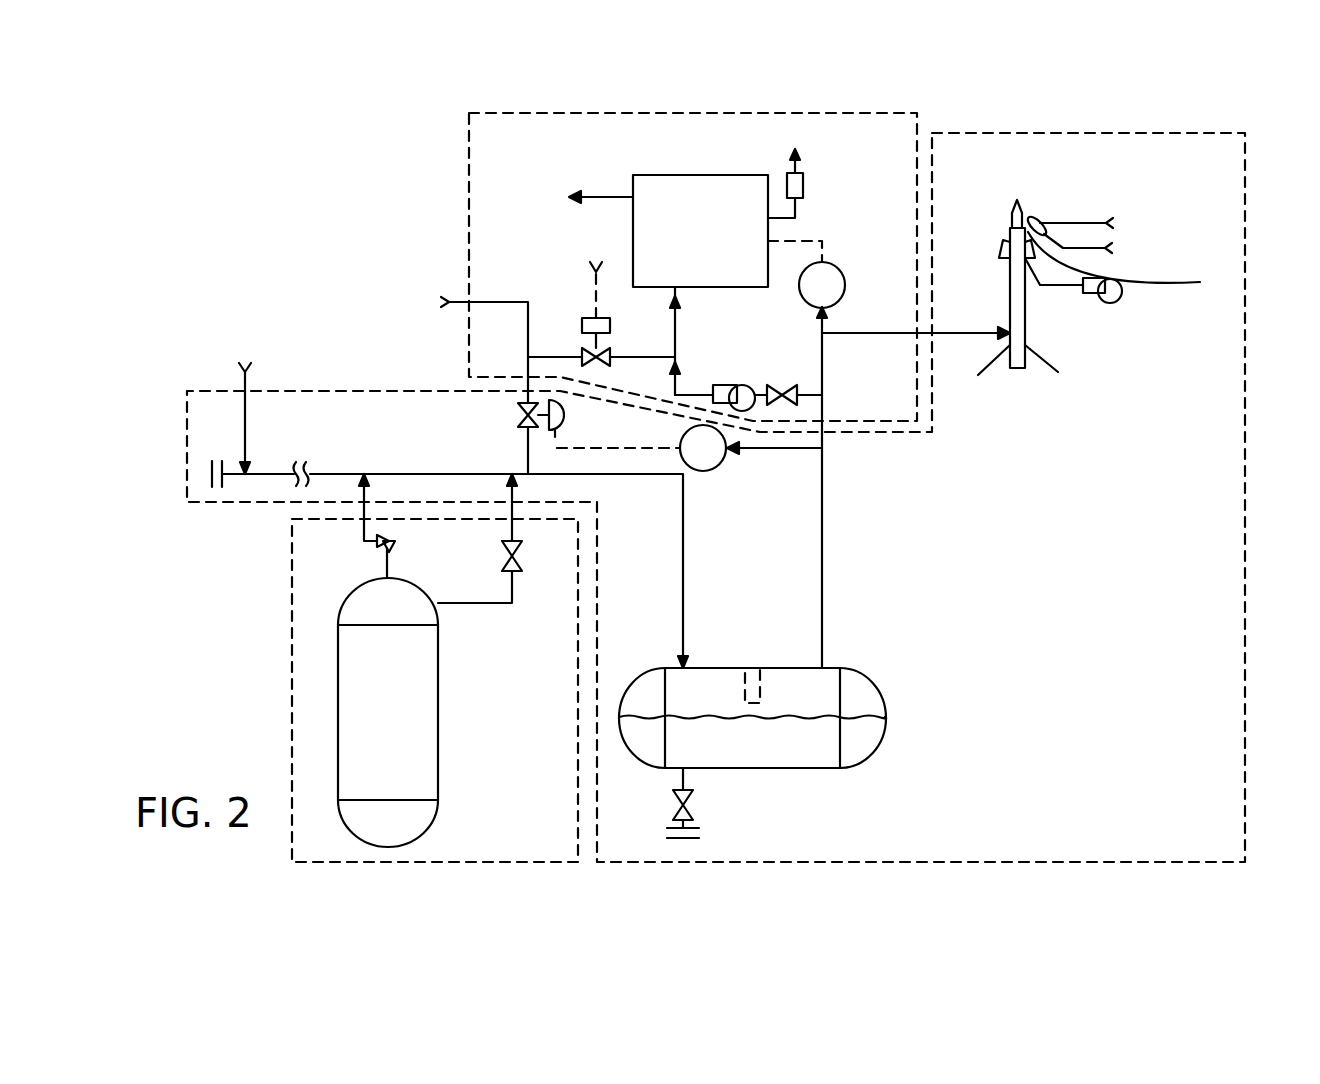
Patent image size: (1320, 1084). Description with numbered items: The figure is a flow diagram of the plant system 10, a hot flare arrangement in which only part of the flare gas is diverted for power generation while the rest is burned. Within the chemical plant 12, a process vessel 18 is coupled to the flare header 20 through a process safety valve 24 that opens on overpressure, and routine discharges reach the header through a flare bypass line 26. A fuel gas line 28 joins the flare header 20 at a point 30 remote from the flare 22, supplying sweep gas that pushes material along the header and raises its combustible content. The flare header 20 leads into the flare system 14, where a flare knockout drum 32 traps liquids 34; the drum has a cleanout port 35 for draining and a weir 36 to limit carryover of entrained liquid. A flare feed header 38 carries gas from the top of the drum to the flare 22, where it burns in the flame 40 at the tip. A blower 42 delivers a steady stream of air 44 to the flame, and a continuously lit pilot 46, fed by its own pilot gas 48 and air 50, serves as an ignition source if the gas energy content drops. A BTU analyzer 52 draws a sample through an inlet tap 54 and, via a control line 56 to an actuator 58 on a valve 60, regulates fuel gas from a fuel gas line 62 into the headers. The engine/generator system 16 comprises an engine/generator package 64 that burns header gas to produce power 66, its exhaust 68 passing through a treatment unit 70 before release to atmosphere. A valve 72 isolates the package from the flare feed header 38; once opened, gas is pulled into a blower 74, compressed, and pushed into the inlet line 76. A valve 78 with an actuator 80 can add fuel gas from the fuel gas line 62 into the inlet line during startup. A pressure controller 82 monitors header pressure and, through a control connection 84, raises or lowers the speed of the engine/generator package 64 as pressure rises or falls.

The plant system 10 is at (386, 225).
The chemical plant 12 is at (292, 700).
The flare system 14 is at (1245, 375).
The engine/generator system 16 is at (468, 157).
The process vessel 18 is at (440, 712).
The flare header 20 is at (421, 474).
The flare 22 is at (1010, 297).
The process safety valve 24 is at (397, 551).
The flare bypass line 26 is at (490, 604).
The fuel gas line 28 is at (250, 418).
The point on the flare header 30 is at (245, 480).
The flare knockout drum 32 is at (674, 667).
The liquids 34 is at (860, 745).
The cleanout port 35 is at (691, 813).
The weir 36 is at (751, 667).
The flare feed header 38 is at (853, 335).
The flame 40 is at (1032, 210).
The blower 42 is at (1122, 290).
The air 44 is at (1050, 287).
The pilot 46 is at (1032, 214).
The pilot gas 48 is at (1130, 261).
The air 50 is at (1080, 224).
The BTU analyzer 52 is at (705, 471).
The inlet tap 54 is at (778, 450).
The control line 56 is at (612, 450).
The actuator 58 is at (565, 418).
The valve 60 is at (518, 419).
The fuel gas line 62 is at (528, 341).
The engine/generator package 64 is at (688, 172).
The power 66 is at (611, 197).
The exhaust 68 is at (783, 219).
The treatment unit 70 is at (806, 187).
The valve 72 is at (780, 385).
The blower 74 is at (727, 385).
The inlet line 76 is at (680, 332).
The valve 78 is at (600, 358).
The actuator 80 is at (610, 320).
The pressure controller 82 is at (845, 285).
The control connection 84 is at (826, 250).